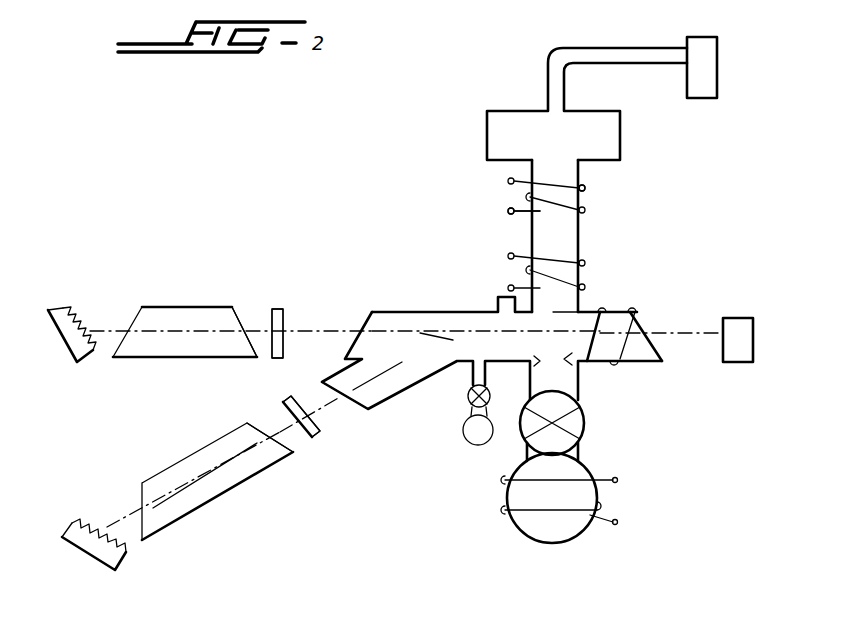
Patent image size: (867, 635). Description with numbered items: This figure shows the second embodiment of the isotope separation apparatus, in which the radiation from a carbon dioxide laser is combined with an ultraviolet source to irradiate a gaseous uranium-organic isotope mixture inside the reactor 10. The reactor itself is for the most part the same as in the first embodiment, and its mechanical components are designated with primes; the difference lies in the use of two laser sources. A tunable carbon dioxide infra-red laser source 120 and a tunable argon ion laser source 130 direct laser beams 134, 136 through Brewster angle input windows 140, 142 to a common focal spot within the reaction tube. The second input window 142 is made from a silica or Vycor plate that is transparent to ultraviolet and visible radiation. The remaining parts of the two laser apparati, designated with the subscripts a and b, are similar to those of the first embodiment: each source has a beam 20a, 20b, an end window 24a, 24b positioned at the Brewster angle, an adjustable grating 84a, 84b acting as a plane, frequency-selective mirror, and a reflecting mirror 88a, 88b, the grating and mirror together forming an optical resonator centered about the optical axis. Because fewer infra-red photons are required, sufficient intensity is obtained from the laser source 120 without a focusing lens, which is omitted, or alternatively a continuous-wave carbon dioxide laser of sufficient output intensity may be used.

The reactor 10 is at (481, 226).
The laser beam (first source) 20a is at (130, 325).
The laser beam (second source) 20b is at (140, 497).
The exit window of first laser apparatus 24a is at (245, 318).
The exit window of second laser apparatus 24b is at (253, 425).
The adjustable grating of first laser 84a is at (62, 347).
The adjustable grating of second laser 84b is at (93, 557).
The reflecting mirror of first laser 88a is at (284, 318).
The reflecting mirror of second laser 88b is at (287, 447).
The tunable CO2 infra-red laser source 120 is at (196, 298).
The tunable argon ion laser source 130 is at (186, 440).
The laser beam 134 is at (263, 310).
The laser beam 136 is at (320, 413).
The Brewster angle input window 140 is at (364, 325).
The second input window 142 is at (355, 407).